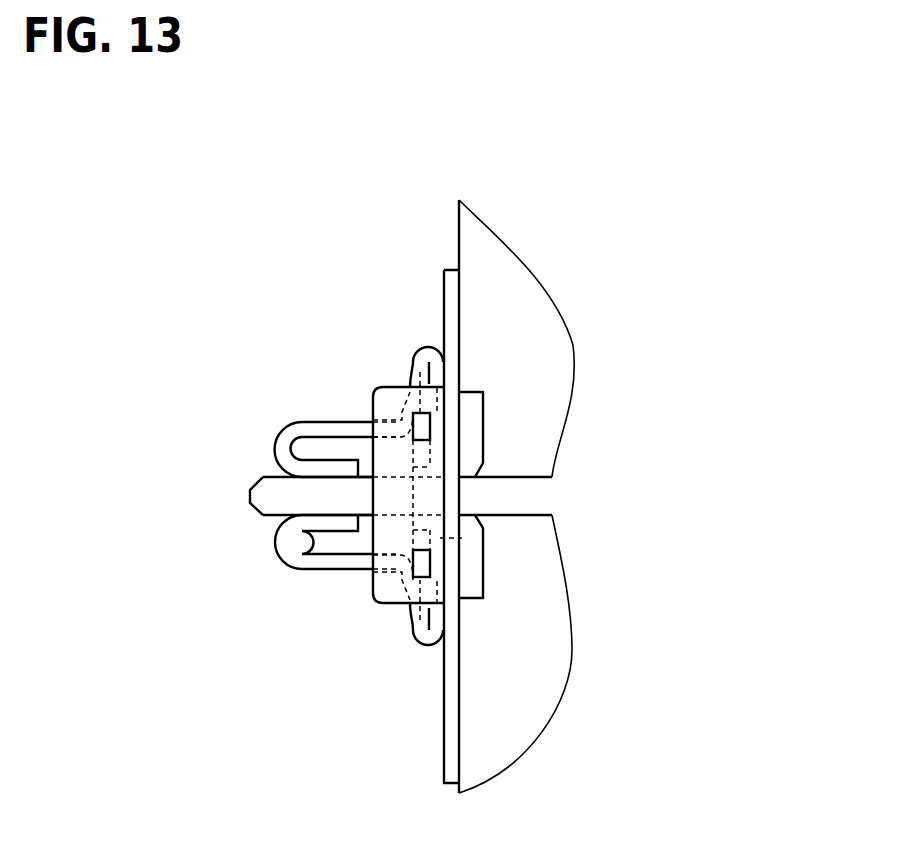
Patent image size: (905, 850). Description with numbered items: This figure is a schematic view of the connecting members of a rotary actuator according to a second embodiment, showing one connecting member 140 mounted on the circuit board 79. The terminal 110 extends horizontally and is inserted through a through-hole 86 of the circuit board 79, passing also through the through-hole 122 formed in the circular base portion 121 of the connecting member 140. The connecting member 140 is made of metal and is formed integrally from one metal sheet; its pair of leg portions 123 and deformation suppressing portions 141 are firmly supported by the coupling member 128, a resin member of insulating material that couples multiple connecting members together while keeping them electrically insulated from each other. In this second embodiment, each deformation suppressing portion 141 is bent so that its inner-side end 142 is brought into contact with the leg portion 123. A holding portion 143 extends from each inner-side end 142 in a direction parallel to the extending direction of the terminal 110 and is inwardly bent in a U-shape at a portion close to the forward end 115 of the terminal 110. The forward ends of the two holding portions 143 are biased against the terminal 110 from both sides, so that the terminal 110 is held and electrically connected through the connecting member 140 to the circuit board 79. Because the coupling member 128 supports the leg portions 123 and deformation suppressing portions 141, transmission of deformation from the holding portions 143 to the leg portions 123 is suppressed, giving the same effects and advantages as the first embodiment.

The circuit board 79 is at (450, 747).
The through-hole 86 is at (462, 515).
The terminal 110 is at (279, 561).
The forward end 115 is at (256, 508).
The base portion 121 is at (462, 538).
The through-hole 122 is at (445, 484).
The leg portion 123 is at (432, 372).
The coupling member 128 is at (377, 408).
The connecting member 140 is at (303, 490).
The deformation suppressing portion 141 is at (418, 373).
The inner-side end 142 is at (402, 412).
The holding portion 143 is at (323, 468).